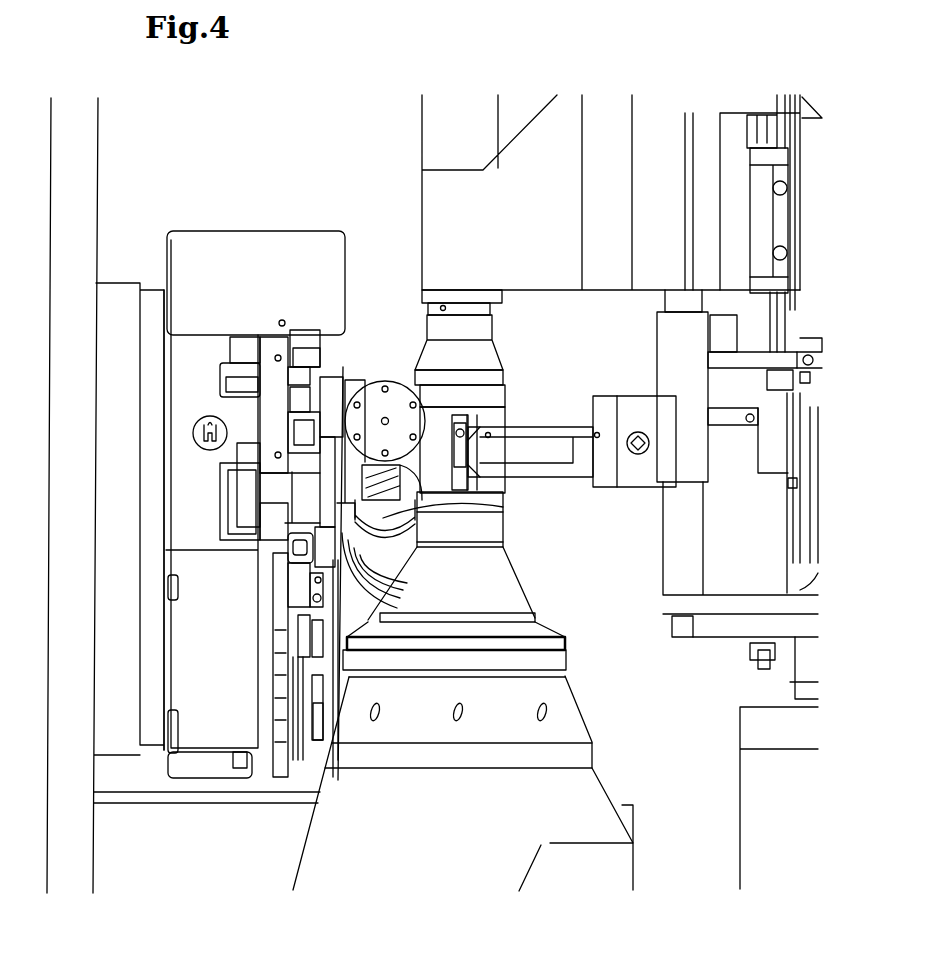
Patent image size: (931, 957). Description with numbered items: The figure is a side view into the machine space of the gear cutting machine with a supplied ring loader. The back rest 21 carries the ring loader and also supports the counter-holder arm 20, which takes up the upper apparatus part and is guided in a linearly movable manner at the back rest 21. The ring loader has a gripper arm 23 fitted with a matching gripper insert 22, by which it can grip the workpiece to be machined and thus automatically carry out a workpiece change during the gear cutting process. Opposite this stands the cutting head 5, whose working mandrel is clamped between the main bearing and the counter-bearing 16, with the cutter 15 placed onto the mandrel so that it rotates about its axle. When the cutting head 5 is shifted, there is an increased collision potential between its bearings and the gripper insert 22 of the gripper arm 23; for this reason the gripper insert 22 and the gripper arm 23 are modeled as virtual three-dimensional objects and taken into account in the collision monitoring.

The cutting head 5 is at (256, 262).
The cutter 15 is at (533, 526).
The counter-bearing 16 is at (392, 398).
The counter-holder arm 20 is at (661, 108).
The back rest 21 is at (804, 281).
The gripper insert 22 is at (493, 420).
The gripper arm 23 is at (543, 427).